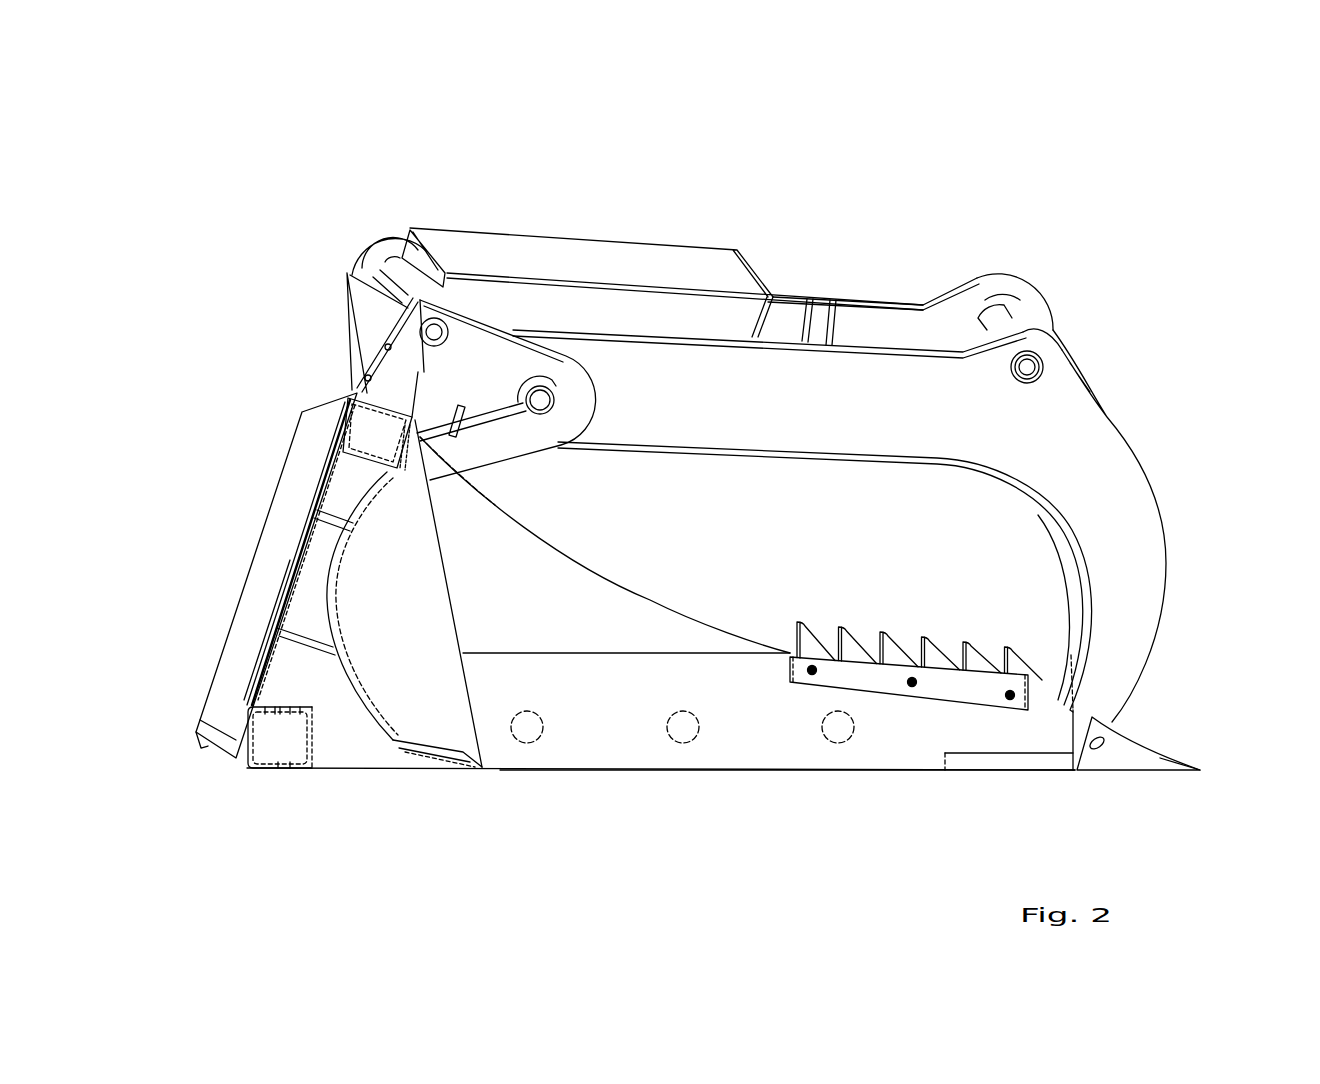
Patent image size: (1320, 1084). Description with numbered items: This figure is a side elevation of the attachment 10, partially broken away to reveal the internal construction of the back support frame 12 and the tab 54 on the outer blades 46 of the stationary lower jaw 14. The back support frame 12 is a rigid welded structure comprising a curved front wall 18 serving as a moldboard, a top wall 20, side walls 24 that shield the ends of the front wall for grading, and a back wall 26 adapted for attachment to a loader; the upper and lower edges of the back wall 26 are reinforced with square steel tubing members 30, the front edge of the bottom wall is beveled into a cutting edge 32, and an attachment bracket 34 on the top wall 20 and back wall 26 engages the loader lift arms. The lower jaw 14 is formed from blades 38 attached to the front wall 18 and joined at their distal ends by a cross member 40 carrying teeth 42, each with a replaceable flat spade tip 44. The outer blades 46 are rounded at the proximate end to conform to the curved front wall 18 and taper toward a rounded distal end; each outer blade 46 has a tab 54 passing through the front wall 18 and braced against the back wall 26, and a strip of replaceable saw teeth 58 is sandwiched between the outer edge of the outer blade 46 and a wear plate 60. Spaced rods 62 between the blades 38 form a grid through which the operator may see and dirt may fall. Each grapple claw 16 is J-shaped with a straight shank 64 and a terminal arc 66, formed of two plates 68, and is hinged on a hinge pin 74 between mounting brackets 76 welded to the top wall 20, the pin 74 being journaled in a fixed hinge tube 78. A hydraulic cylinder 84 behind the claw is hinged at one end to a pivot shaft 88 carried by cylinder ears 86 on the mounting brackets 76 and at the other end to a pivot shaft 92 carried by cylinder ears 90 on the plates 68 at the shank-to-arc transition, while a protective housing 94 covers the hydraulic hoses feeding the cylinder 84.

The attachment 10 is at (1175, 242).
The back support frame 12 is at (266, 645).
The stationary lower jaw 14 is at (797, 772).
The grapple claws 16 is at (905, 350).
The curved front wall 18 is at (335, 632).
The top wall 20 is at (410, 415).
The side walls 24 is at (415, 663).
The back wall 26 is at (255, 673).
The square steel tubing members 30 is at (345, 428).
The cutting edge 32 is at (447, 758).
The attachment bracket 34 is at (255, 553).
The blades 38 is at (680, 610).
The cross member 40 is at (1000, 763).
The teeth 42 is at (1117, 730).
The flat spade tip 44 is at (1200, 767).
The outer blades 46 is at (638, 580).
The tab 54 is at (308, 595).
The saw teeth 58 is at (927, 636).
The wear plate 60 is at (628, 732).
The rods 62 is at (545, 730).
The straight shank 64 is at (853, 300).
The arc 66 is at (1150, 465).
The plates 68 is at (830, 347).
The hinge pin 74 is at (553, 415).
The mounting brackets 76 is at (420, 228).
The hinge tube 78 is at (546, 383).
The hydraulic cylinder 84 is at (778, 315).
The cylinder ears 86 is at (393, 302).
The pivot shaft 88 is at (437, 333).
The cylinder ears 90 is at (1043, 330).
The pivot shaft 92 is at (1030, 372).
The protective housing 94 is at (568, 247).